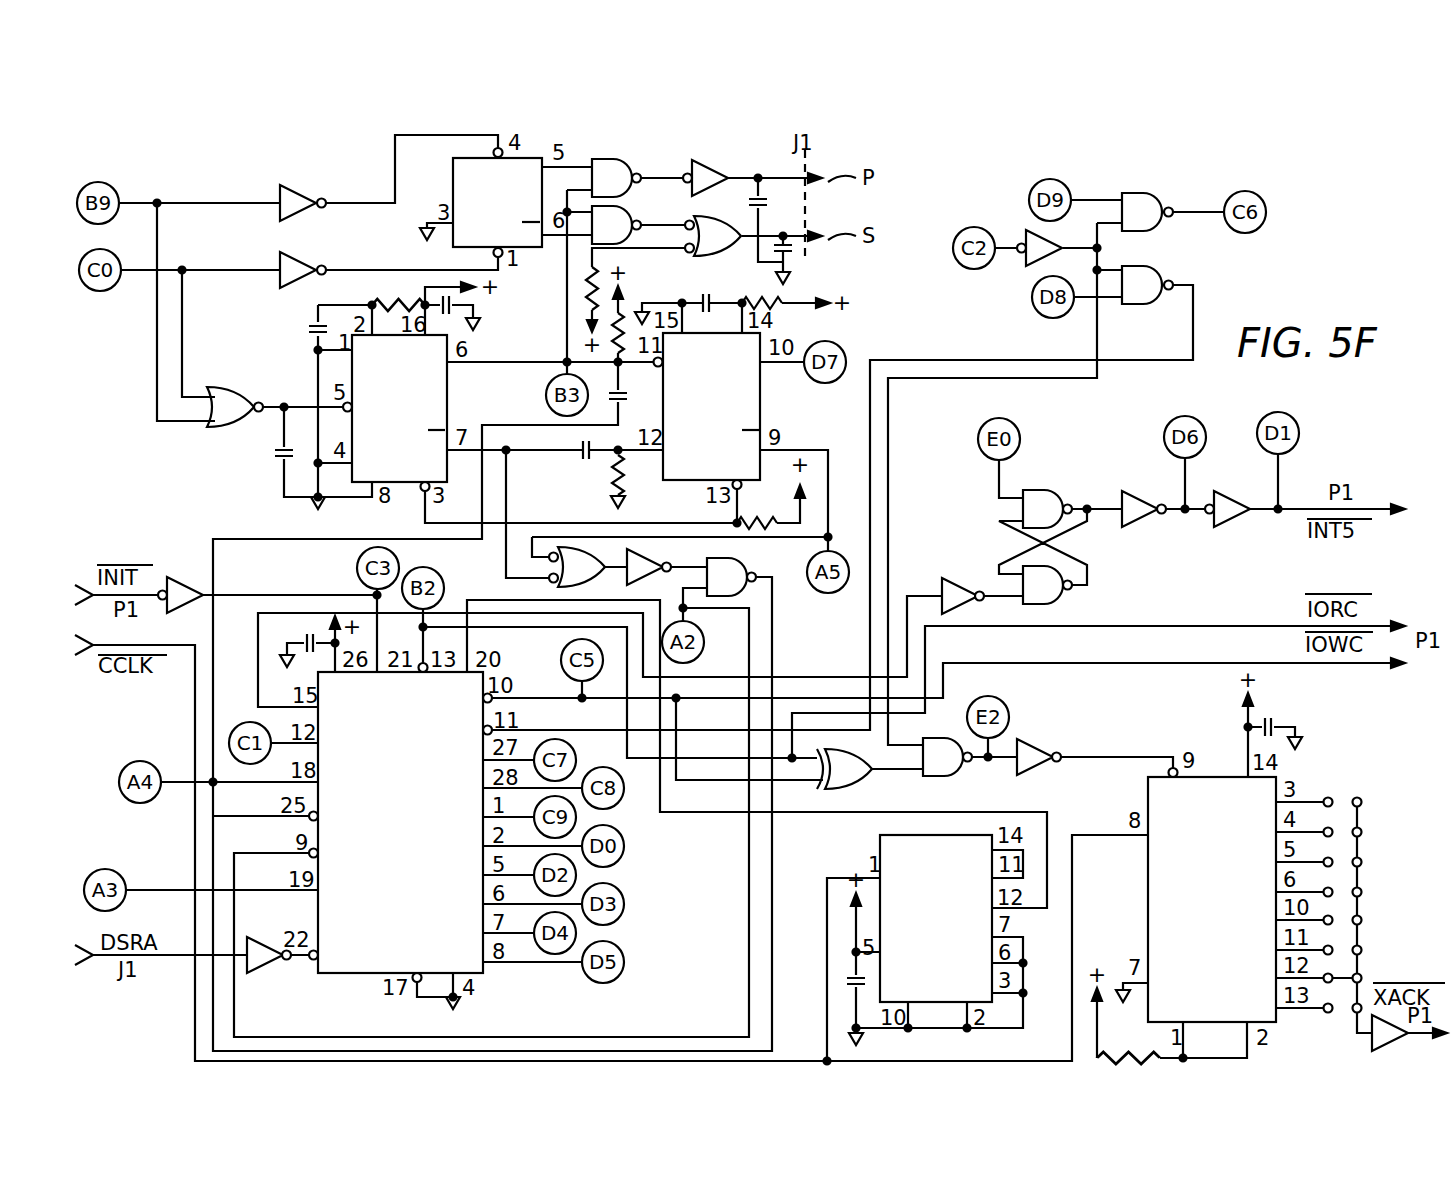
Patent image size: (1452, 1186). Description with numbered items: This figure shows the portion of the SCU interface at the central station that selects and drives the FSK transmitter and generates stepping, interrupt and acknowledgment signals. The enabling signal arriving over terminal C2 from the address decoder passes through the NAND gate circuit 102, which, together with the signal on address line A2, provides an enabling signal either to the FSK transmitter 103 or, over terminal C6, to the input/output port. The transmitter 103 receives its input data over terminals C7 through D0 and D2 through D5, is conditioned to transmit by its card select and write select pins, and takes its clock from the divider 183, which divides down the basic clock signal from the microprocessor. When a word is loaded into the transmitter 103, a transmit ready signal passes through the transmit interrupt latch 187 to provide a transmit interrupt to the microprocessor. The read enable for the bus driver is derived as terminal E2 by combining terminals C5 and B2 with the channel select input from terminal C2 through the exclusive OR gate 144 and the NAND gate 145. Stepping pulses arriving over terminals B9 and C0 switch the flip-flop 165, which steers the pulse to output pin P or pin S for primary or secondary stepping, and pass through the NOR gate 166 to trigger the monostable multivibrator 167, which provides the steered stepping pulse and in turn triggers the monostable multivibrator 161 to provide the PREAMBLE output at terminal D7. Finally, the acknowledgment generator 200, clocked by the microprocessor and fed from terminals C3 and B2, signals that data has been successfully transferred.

The flip-flop 165 is at (462, 166).
The NOR gate 166 is at (233, 428).
The monostable multivibrator 167 is at (447, 397).
The monostable multivibrator 161 is at (760, 402).
The NAND gate circuit 102 is at (1214, 261).
The transmit interrupt latch 187 is at (1046, 487).
The exclusive OR gate 144 is at (853, 789).
The NAND gate 145 is at (948, 776).
The acknowledgment generator 200 is at (1213, 787).
The divider 183 is at (893, 851).
The FSK transmitter 103 is at (415, 742).